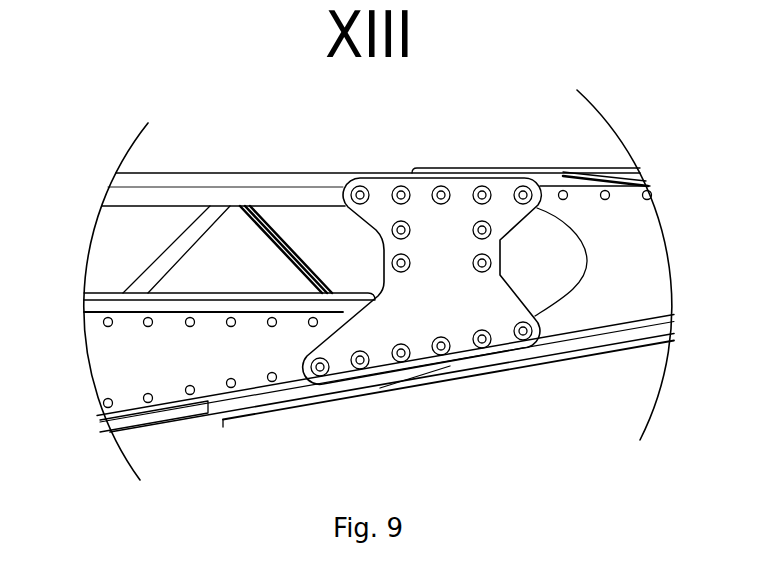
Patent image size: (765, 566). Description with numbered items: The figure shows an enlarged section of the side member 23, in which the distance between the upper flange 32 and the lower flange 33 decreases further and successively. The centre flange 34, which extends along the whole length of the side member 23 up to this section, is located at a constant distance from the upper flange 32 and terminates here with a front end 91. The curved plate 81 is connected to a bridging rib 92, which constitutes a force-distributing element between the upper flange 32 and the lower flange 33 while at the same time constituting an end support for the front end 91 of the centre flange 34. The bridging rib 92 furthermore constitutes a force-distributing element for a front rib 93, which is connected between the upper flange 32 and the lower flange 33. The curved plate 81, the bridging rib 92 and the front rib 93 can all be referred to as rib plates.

The side member 23 is at (513, 148).
The upper flange 32 is at (208, 180).
The lower flange 33 is at (562, 357).
The centre flange 34 is at (257, 303).
The curved plate 81 is at (145, 360).
The front end 91 is at (356, 303).
The bridging rib 92 is at (442, 272).
The front rib 93 is at (617, 247).